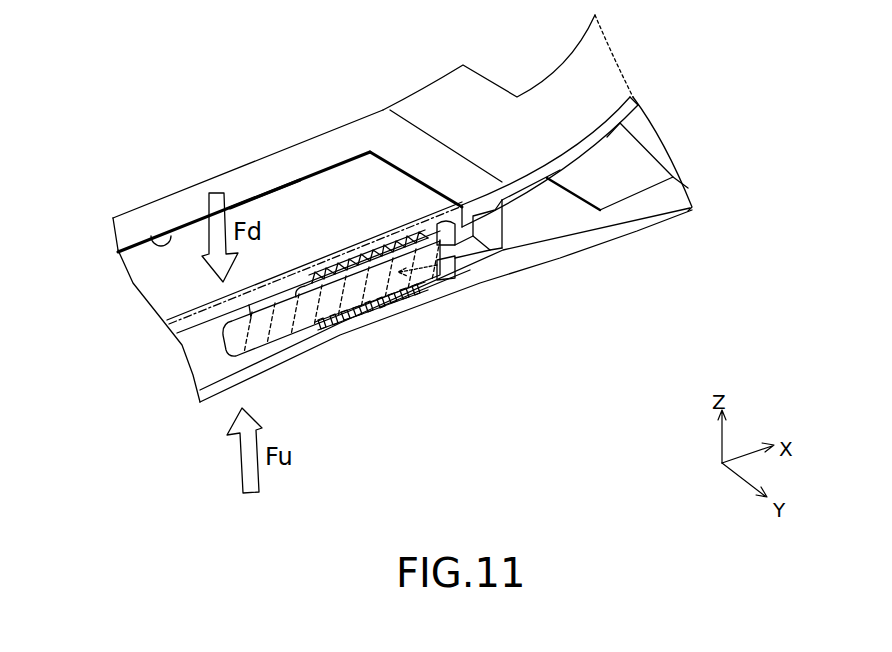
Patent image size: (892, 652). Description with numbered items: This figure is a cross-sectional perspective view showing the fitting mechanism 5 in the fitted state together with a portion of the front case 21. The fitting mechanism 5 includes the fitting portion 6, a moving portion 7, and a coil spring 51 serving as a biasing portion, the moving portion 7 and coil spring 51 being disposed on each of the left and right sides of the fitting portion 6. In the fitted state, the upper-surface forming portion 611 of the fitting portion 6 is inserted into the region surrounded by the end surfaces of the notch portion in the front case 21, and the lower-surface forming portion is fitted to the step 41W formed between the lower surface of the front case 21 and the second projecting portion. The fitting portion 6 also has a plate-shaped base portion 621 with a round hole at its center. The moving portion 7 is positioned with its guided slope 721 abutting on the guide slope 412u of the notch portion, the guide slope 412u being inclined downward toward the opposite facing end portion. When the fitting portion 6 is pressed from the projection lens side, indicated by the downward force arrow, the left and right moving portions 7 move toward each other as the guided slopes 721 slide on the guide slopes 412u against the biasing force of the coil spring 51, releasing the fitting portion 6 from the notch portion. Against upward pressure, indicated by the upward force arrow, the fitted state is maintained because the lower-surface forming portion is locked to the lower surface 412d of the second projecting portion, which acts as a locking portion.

The front case 21 is at (452, 100).
The fitting portion 6 is at (320, 193).
The upper-surface forming portion 611 is at (265, 207).
The base portion 621 is at (457, 303).
The fitting mechanism 5 is at (292, 378).
The coil spring 51 is at (362, 340).
The moving portion 7 is at (382, 320).
The guided slope 721 is at (507, 249).
The guide slope 412u is at (477, 257).
The lower surface 412d is at (478, 284).
The step 41W is at (488, 297).